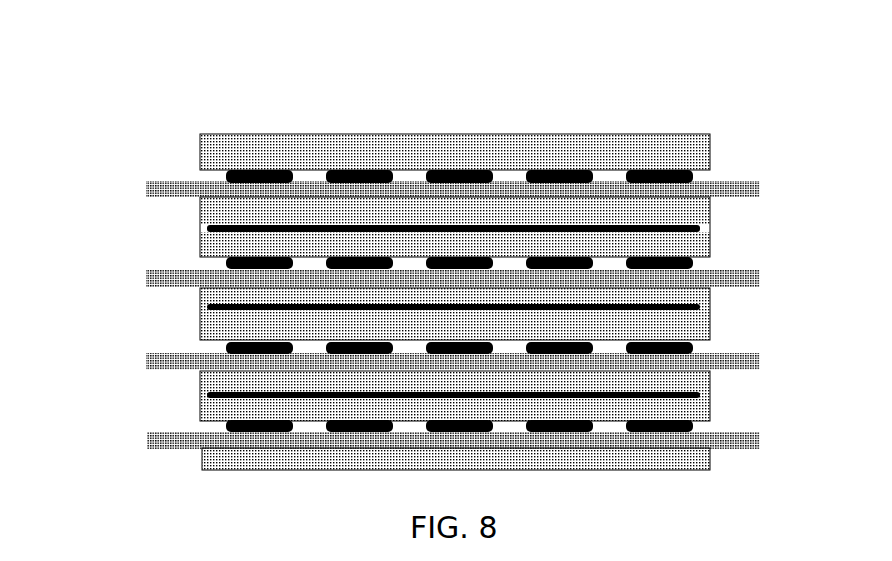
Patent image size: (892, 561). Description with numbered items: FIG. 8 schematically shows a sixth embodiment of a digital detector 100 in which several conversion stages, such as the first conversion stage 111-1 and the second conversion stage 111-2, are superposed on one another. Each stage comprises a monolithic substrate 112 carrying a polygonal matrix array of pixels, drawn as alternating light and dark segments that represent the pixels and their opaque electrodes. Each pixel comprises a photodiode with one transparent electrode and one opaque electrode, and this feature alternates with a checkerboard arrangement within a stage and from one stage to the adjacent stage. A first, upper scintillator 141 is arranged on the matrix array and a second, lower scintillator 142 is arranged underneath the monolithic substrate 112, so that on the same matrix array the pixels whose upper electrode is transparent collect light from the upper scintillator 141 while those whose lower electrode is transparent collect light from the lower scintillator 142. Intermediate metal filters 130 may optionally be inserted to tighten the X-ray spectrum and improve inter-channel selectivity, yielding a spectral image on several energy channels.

The digital detector 100 is at (443, 260).
The first conversion stage 111-1 is at (379, 182).
The second conversion stage 111-2 is at (168, 240).
The monolithic substrate 112 is at (740, 178).
The intermediate metal filter 130 is at (537, 226).
The first scintillator 141 is at (697, 142).
The second scintillator 142 is at (705, 207).